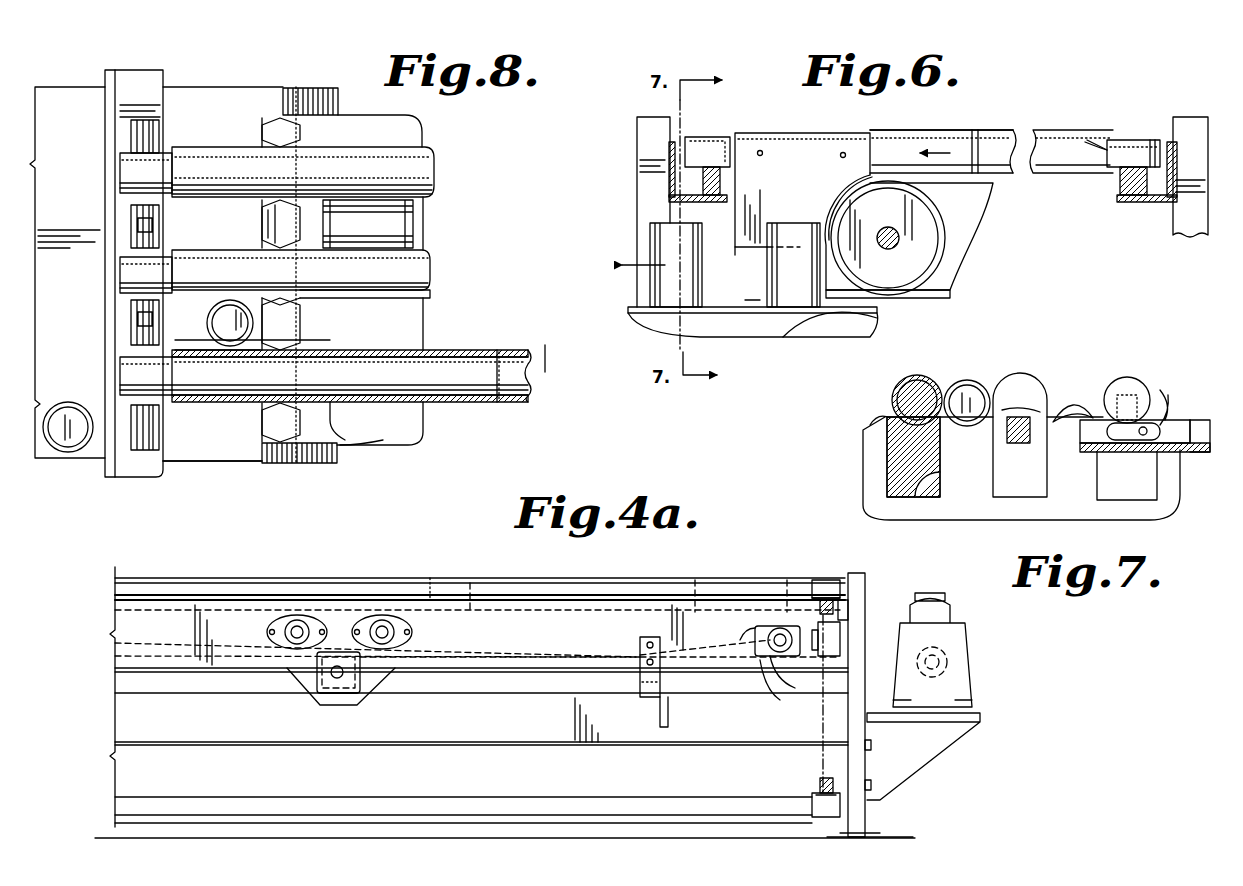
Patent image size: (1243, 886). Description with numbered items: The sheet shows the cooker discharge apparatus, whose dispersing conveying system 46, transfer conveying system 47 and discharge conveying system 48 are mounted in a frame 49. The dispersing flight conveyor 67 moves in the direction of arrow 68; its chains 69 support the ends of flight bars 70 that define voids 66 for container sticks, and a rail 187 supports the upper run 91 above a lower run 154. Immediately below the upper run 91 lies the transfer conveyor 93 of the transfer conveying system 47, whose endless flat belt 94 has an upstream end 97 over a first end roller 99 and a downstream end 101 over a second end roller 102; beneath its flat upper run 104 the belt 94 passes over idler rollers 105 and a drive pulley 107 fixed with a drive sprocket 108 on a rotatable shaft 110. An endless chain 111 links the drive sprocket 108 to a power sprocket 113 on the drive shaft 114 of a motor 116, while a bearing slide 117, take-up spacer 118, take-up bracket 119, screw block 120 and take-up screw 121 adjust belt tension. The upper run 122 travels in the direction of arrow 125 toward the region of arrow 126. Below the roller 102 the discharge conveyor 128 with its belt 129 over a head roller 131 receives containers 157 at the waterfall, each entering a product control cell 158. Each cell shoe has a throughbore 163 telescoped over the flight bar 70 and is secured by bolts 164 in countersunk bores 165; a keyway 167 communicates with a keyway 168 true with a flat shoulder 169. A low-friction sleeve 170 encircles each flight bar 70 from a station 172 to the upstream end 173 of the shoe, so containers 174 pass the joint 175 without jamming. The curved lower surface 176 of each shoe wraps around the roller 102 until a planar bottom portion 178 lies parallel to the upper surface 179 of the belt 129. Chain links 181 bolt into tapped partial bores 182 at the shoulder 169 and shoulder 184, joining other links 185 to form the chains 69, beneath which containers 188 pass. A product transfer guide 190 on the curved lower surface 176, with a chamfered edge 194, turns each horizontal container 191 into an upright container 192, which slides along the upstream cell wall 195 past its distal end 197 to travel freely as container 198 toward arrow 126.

In FIG. 8, the dispersing conveying system 46 is at (510, 349).
In FIG. 8, the transfer conveying system 47 is at (428, 441).
In FIG. 4A, the transfer conveying system 47 is at (435, 715).
In FIG. 8, the discharge conveying system 48 is at (228, 462).
In FIG. 4A, the frame 49 is at (865, 606).
In FIG. 8, the voids 66 is at (432, 223).
In FIG. 8, the dispersing flight conveyor 67 is at (435, 161).
In FIG. 4A, the dispersing flight conveyor 67 is at (373, 578).
In FIG. 8, the arrow 68 is at (545, 346).
In FIG. 8, the chains 69 is at (131, 149).
In FIG. 6, the chains 69 is at (718, 190).
In FIG. 7, the chains 69 is at (1192, 426).
In FIG. 8, the flight bars 70 is at (180, 152).
In FIG. 4A, the flight bars 70 is at (835, 582).
In FIG. 4A, the upper run 91 is at (587, 592).
In FIG. 8, the transfer conveyor 93 is at (385, 448).
In FIG. 8, the belt 94 is at (412, 140).
In FIG. 6, the belt 94 is at (985, 195).
In FIG. 4A, the belt 94 is at (692, 584).
In FIG. 4A, the upstream end 97 is at (777, 584).
In FIG. 4A, the first end roller 99 is at (778, 695).
In FIG. 8, the downstream end 101 is at (275, 464).
In FIG. 6, the second end roller 102 is at (915, 215).
In FIG. 4A, the flat upper run 104 is at (431, 578).
In FIG. 4A, the idler rollers 105 is at (268, 645).
In FIG. 4A, the drive pulley 107 is at (347, 705).
In FIG. 4A, the drive sprocket 108 is at (330, 706).
In FIG. 4A, the rotatable shaft 110 is at (318, 672).
In FIG. 4A, the endless chain 111 is at (478, 690).
In FIG. 4A, the power sprocket 113 is at (948, 665).
In FIG. 4A, the drive shaft 114 is at (960, 696).
In FIG. 4A, the motor 116 is at (957, 628).
In FIG. 4A, the bearing slide 117 is at (792, 662).
In FIG. 4A, the take-up spacer 118 is at (752, 635).
In FIG. 4A, the take-up bracket 119 is at (840, 650).
In FIG. 4A, the screw block 120 is at (821, 660).
In FIG. 4A, the take-up screw 121 is at (842, 630).
In FIG. 4A, the upper run 122 is at (489, 584).
In FIG. 8, the arrow 125 is at (352, 340).
In FIG. 4A, the arrow 125 is at (520, 628).
In FIG. 8, the arrow 126 is at (72, 296).
In FIG. 6, the discharge conveyor 128 is at (777, 314).
In FIG. 8, the belt 129 is at (236, 94).
In FIG. 6, the belt 129 is at (752, 320).
In FIG. 6, the head roller 131 is at (834, 330).
In FIG. 4A, the lower run 154 is at (613, 808).
In FIG. 8, the containers 157 is at (378, 262).
In FIG. 8, the product control cell 158 is at (300, 208).
In FIG. 6, the throughbore 163 is at (1093, 136).
In FIG. 7, the throughbore 163 is at (905, 378).
In FIG. 6, the bolts 164 is at (759, 150).
In FIG. 7, the countersunk bores 165 is at (897, 392).
In FIG. 7, the keyway 167 is at (912, 430).
In FIG. 7, the keyway 168 is at (919, 380).
In FIG. 7, the flat shoulder 169 is at (1060, 400).
In FIG. 8, the low-friction sleeve 170 is at (387, 405).
In FIG. 6, the low-friction sleeve 170 is at (1091, 136).
In FIG. 4A, the low-friction sleeve 170 is at (733, 808).
In FIG. 6, the station 172 is at (1103, 137).
In FIG. 4A, the station 172 is at (810, 580).
In FIG. 6, the upstream end 173 is at (870, 145).
In FIG. 7, the containers 174 is at (965, 383).
In FIG. 6, the joint 175 is at (840, 148).
In FIG. 6, the curved lower surface 176 is at (830, 203).
In FIG. 6, the bottom portion 178 is at (736, 262).
In FIG. 6, the upper surface 179 is at (750, 310).
In FIG. 6, the chain links 181 is at (700, 200).
In FIG. 7, the chain links 181 is at (1128, 447).
In FIG. 6, the tapped partial bores 182 is at (708, 138).
In FIG. 7, the tapped partial bores 182 is at (1127, 378).
In FIG. 6, the shoulder 184 is at (1153, 140).
In FIG. 7, the shoulder 184 is at (1110, 440).
In FIG. 7, the links 185 is at (1165, 425).
In FIG. 8, the rail 187 is at (150, 470).
In FIG. 6, the rail 187 is at (670, 200).
In FIG. 7, the rail 187 is at (1183, 455).
In FIG. 4A, the rail 187 is at (865, 582).
In FIG. 6, the containers 188 is at (660, 290).
In FIG. 8, the product transfer guide 190 is at (300, 310).
In FIG. 6, the product transfer guide 190 is at (843, 188).
In FIG. 7, the product transfer guide 190 is at (950, 440).
In FIG. 6, the container 191 is at (953, 132).
In FIG. 8, the container 192 is at (207, 324).
In FIG. 6, the container 192 is at (775, 275).
In FIG. 8, the edge 194 is at (266, 216).
In FIG. 8, the upstream cell wall 195 is at (197, 350).
In FIG. 8, the distal end 197 is at (301, 270).
In FIG. 8, the container 198 is at (68, 408).